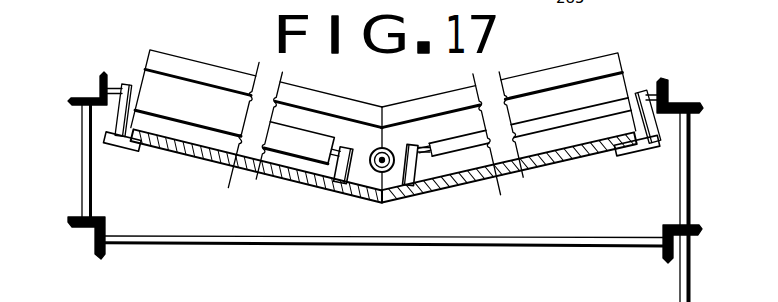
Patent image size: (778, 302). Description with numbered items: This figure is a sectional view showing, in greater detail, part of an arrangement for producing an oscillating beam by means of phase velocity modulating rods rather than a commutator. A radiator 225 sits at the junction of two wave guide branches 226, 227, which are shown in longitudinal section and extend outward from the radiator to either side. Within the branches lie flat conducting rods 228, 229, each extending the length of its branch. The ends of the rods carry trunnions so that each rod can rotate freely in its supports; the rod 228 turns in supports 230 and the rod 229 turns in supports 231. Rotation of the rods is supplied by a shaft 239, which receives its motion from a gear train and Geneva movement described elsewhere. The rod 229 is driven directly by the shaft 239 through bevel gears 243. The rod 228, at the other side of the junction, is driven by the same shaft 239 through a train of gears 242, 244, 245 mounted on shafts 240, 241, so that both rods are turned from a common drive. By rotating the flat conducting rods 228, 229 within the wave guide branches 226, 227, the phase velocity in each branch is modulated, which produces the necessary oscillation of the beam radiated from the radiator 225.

The radiator 225 is at (373, 150).
The wave guide branch 226 is at (300, 186).
The wave guide branch 227 is at (486, 183).
The flat conducting rod 228 is at (304, 143).
The flat conducting rod 229 is at (571, 123).
The support 230 is at (116, 134).
The support 231 is at (411, 190).
The shaft 239 is at (691, 144).
The shaft 240 is at (537, 249).
The shaft 241 is at (87, 196).
The gear 242 is at (686, 243).
The bevel gears 243 is at (674, 99).
The gear 244 is at (95, 232).
The gear 245 is at (100, 96).